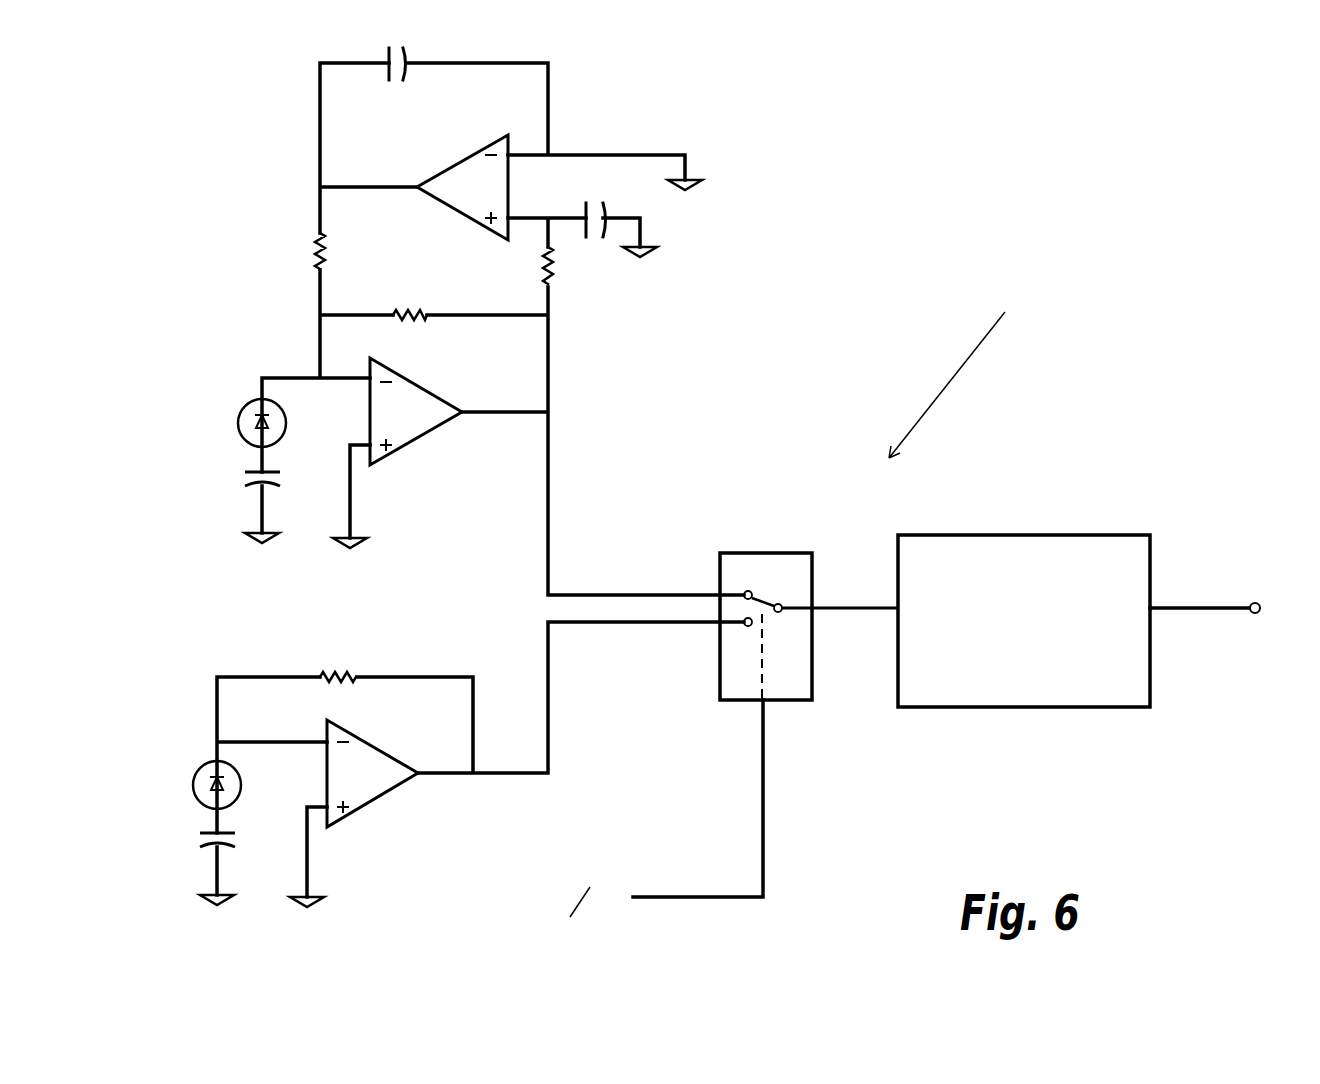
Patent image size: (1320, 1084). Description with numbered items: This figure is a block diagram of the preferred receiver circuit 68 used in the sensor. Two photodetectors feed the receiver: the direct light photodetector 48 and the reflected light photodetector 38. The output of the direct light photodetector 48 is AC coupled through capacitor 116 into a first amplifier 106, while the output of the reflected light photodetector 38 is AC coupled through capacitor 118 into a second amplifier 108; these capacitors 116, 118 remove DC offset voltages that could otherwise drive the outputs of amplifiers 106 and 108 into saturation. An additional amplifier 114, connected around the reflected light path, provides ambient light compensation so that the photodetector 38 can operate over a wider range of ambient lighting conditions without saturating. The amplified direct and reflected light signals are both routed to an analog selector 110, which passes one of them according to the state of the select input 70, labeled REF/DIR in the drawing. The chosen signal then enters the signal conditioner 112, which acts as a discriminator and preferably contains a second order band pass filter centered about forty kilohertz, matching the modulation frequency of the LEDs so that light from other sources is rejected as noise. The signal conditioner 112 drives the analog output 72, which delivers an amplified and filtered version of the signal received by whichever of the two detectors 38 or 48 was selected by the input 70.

The reflected light photodetector 38 is at (242, 413).
The direct light photodetector 48 is at (200, 772).
The receiver circuit 68 is at (967, 370).
The input 70 is at (657, 897).
The analog output 72 is at (1255, 603).
The first amplifier 106 is at (375, 805).
The second amplifier 108 is at (405, 447).
The analog selector 110 is at (759, 553).
The signal conditioner 112 is at (1025, 707).
The amplifier 114 is at (460, 162).
The capacitor 116 is at (200, 840).
The capacitor 118 is at (245, 482).